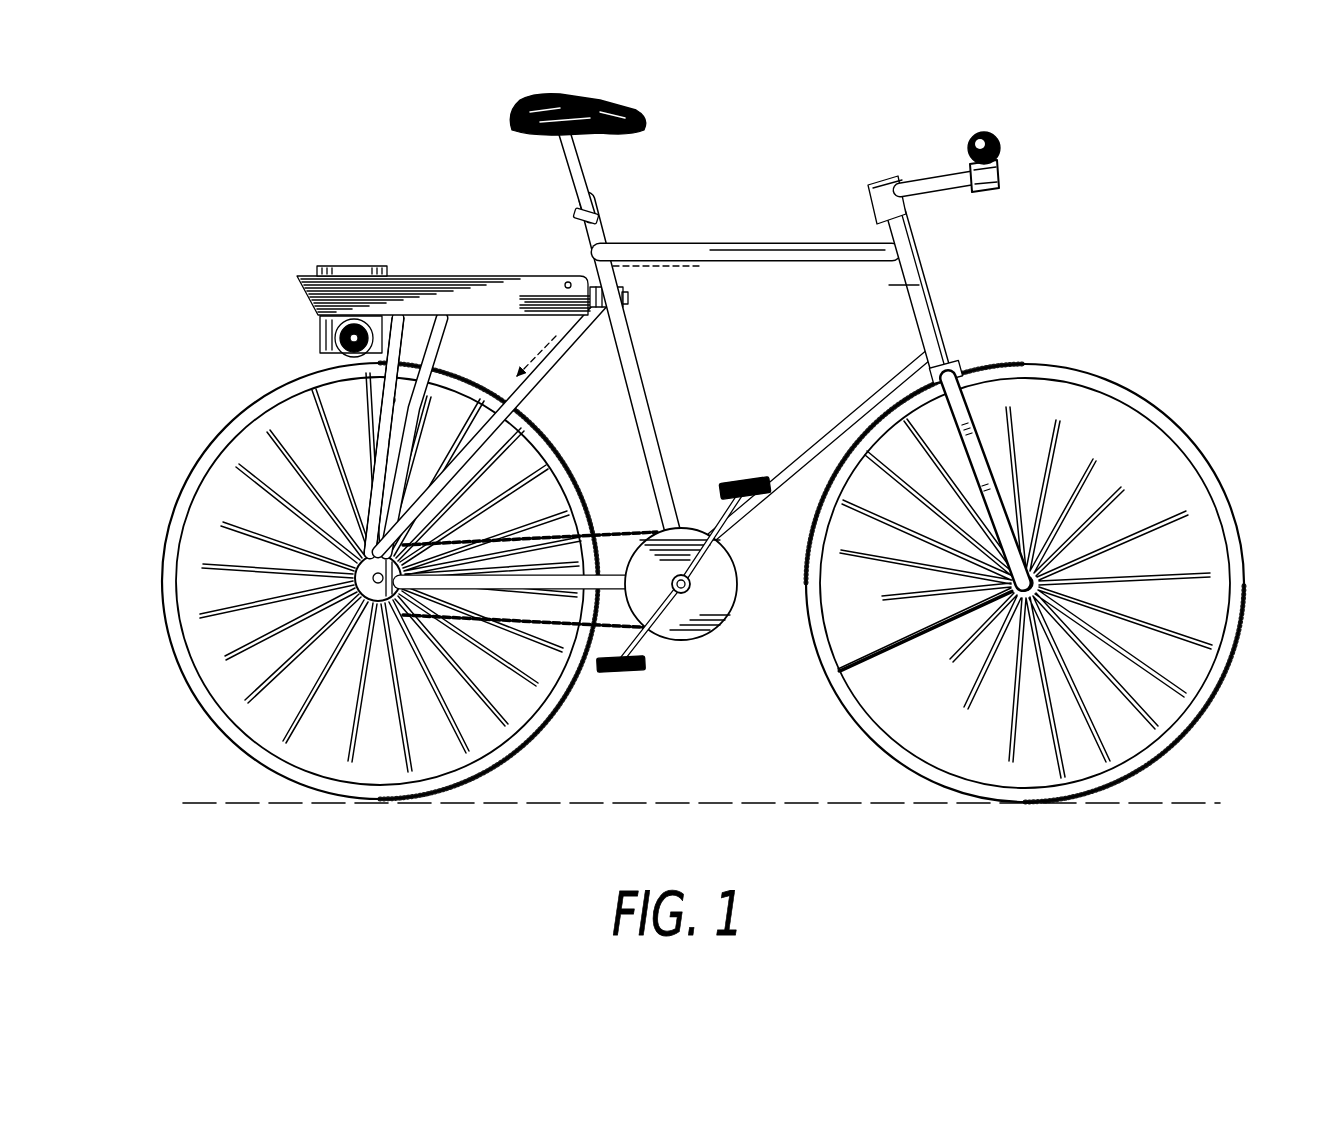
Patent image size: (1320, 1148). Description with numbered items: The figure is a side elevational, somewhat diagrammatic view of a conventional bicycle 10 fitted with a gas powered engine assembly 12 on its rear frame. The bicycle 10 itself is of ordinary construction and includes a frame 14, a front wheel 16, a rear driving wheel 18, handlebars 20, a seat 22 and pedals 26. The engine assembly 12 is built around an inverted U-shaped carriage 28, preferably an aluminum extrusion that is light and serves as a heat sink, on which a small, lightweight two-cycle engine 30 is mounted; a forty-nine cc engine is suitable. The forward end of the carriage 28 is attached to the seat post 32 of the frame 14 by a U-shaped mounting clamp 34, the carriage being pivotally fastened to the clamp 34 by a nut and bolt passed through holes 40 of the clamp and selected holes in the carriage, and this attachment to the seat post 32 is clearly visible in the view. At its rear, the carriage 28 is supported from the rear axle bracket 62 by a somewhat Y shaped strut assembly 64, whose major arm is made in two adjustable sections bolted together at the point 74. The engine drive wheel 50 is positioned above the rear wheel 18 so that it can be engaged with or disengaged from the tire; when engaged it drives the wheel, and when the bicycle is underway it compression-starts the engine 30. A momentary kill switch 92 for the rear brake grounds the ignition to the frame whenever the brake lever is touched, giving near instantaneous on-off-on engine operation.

The bicycle 10 is at (1122, 226).
The gas powered engine assembly 12 is at (292, 249).
The frame 14 is at (843, 263).
The front wheel 16 is at (1117, 393).
The rear driving wheel 18 is at (165, 585).
The handlebars 20 is at (1000, 160).
The seat 22 is at (574, 96).
The pedals 26 is at (766, 480).
The carriage 28 is at (522, 286).
The engine 30 is at (356, 268).
The seat post 32 is at (581, 180).
The U-shaped mounting clamp 34 is at (617, 305).
The holes of clamp 40 is at (594, 290).
The drive wheel 50 is at (318, 342).
The rear axle bracket 62 is at (300, 580).
The Y shaped strut assembly 64 is at (450, 345).
The bolted joint of major arm 74 is at (394, 444).
The rear brake kill switch 92 is at (555, 342).